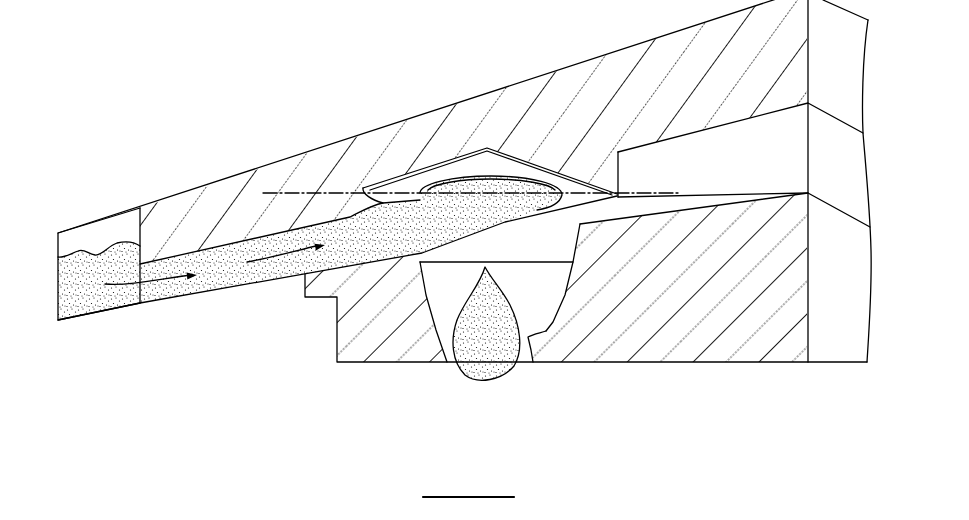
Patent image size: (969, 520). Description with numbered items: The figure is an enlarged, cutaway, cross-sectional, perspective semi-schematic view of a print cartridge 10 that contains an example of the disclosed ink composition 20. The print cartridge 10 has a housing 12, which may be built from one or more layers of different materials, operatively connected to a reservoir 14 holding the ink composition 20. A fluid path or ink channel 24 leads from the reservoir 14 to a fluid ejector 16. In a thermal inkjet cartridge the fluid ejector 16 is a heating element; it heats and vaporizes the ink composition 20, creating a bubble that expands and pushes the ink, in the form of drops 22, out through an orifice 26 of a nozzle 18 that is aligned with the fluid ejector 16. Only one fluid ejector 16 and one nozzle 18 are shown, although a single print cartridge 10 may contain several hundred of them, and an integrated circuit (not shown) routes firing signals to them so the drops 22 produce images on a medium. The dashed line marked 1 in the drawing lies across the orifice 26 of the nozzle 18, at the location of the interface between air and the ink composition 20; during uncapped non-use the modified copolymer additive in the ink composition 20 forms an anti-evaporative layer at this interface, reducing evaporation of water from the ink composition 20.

The print cartridge 10 is at (160, 134).
The housing 12 is at (368, 330).
The reservoir 14 is at (98, 313).
The fluid ejector 16 is at (487, 160).
The nozzle 18 is at (530, 349).
The ink composition 20 is at (85, 275).
The drops 22 is at (482, 362).
The fluid path/ink channel 24 is at (222, 283).
The orifice 26 is at (519, 190).
The axis 1 is at (640, 196).